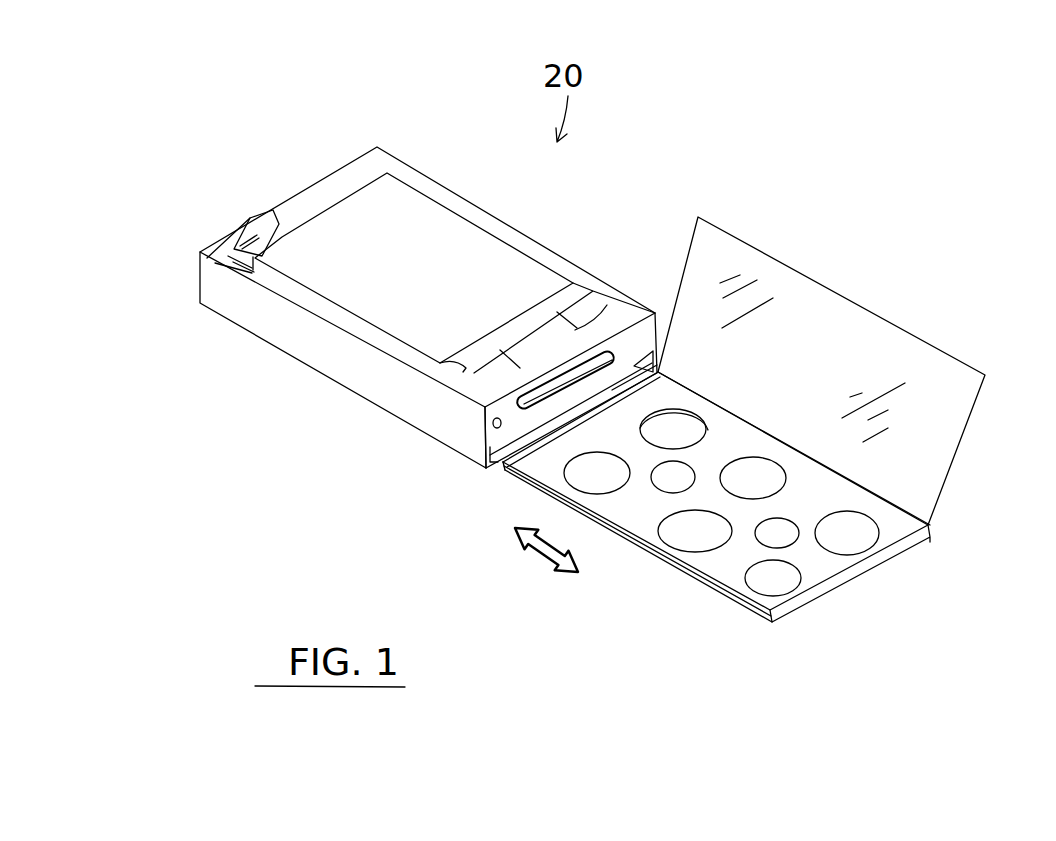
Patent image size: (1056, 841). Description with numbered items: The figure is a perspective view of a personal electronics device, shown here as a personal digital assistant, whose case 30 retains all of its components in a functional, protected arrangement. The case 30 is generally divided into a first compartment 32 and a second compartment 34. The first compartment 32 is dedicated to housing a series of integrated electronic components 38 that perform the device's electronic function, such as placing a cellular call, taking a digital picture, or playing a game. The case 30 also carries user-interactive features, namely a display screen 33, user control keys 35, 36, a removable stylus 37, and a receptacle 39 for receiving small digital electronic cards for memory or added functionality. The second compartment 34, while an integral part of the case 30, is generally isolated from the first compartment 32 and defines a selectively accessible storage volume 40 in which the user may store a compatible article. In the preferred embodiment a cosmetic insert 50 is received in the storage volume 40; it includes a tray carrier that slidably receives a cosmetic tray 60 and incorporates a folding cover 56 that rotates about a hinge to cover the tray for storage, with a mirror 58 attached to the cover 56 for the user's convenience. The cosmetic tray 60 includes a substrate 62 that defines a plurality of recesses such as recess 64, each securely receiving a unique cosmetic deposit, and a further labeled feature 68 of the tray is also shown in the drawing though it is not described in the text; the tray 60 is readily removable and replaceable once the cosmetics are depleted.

The case 30 is at (222, 323).
The first compartment 32 is at (237, 219).
The display screen 33 is at (318, 212).
The second compartment 34 is at (489, 470).
The user control key 35 is at (447, 370).
The user control key 36 is at (595, 297).
The removable stylus 37 is at (487, 420).
The integrated electronic components 38 is at (255, 232).
The receptacle 39 is at (485, 403).
The storage volume 40 is at (632, 366).
The cosmetic insert 50 is at (920, 560).
The folding cover 56 is at (752, 242).
The mirror 58 is at (827, 330).
The cosmetic tray 60 is at (634, 543).
The substrate 62 is at (633, 511).
The recess 64 is at (683, 407).
The pan 68 is at (703, 533).